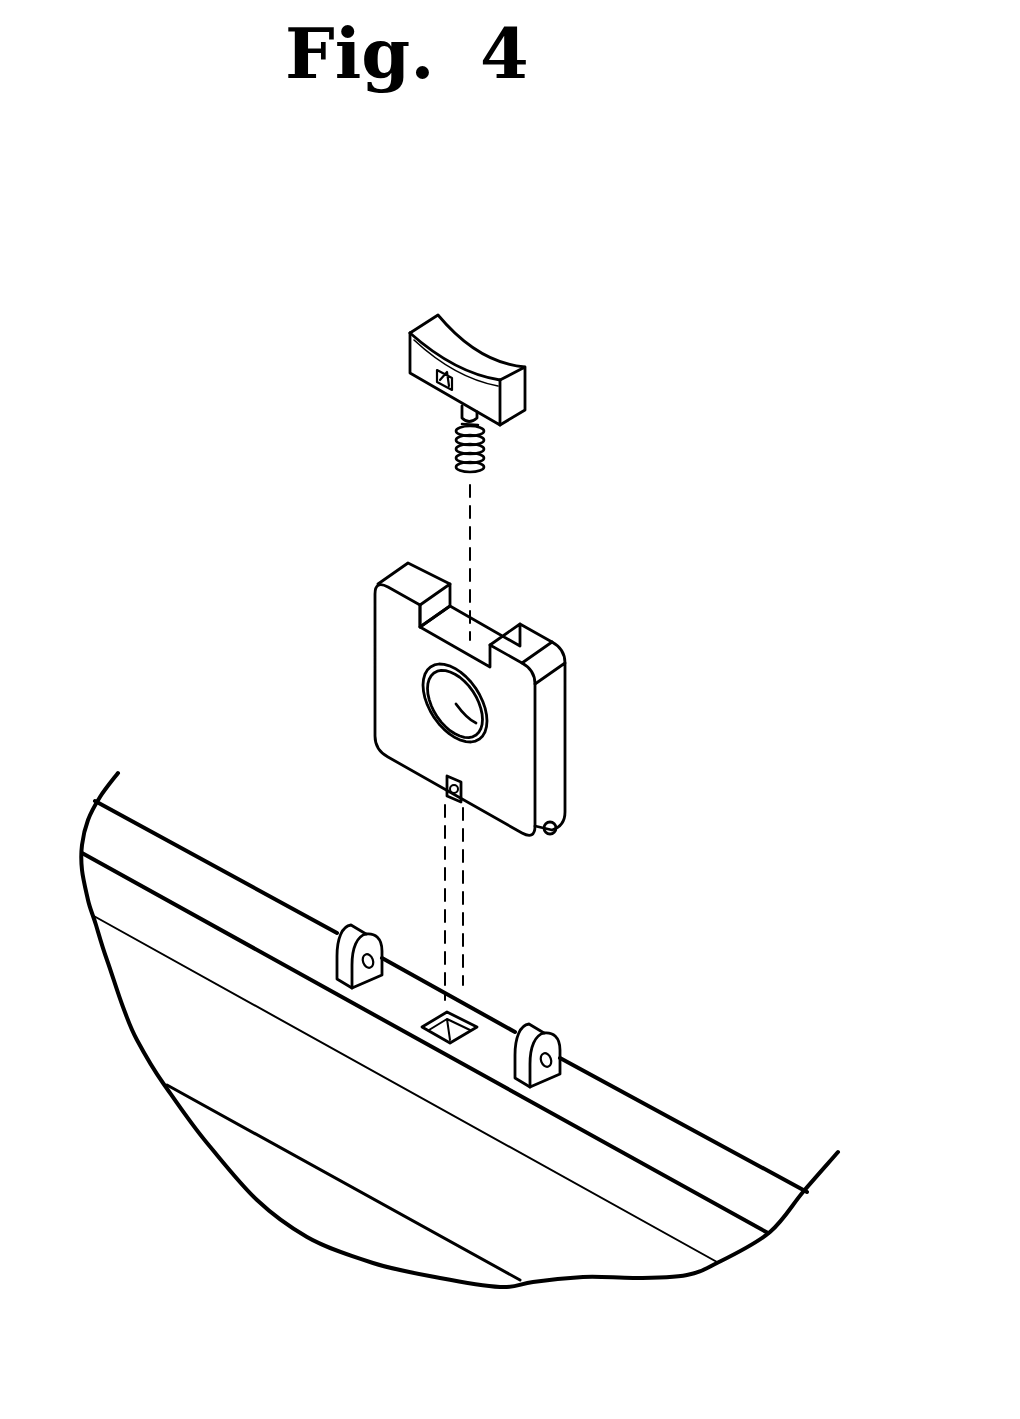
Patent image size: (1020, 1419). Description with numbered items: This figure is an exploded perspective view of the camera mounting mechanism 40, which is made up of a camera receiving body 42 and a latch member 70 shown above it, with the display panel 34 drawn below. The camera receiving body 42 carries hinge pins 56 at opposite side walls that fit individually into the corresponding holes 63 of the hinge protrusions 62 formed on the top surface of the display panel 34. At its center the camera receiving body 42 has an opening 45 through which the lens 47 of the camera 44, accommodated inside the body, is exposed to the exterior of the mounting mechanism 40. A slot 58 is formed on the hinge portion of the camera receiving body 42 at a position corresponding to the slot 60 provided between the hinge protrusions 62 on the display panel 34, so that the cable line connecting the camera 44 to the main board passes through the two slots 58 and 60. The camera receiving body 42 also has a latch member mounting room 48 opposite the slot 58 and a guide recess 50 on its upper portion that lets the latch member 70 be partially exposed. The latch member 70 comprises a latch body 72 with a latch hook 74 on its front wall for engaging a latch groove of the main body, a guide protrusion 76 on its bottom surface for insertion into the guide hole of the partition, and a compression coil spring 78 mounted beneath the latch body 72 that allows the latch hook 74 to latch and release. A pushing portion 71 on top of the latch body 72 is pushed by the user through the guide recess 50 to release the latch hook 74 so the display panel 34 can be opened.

The display panel 34 is at (677, 1147).
The camera mounting mechanism 40 is at (506, 694).
The camera receiving body 42 is at (550, 678).
The camera 44 is at (446, 693).
The opening 45 is at (420, 698).
The lens 47 is at (460, 708).
The latch member mounting room 48 is at (465, 614).
The guide recess 50 is at (413, 612).
The hinge pin 56 is at (620, 817).
The slot 58 is at (447, 790).
The slot 60 is at (467, 1017).
The hinge protrusion 62 is at (358, 938).
The hole 63 is at (375, 930).
The latch member 70 is at (522, 386).
The pushing portion 71 is at (467, 353).
The latch body 72 is at (527, 382).
The latch hook 74 is at (415, 369).
The guide protrusion 76 is at (463, 418).
The compression coil spring 78 is at (523, 460).